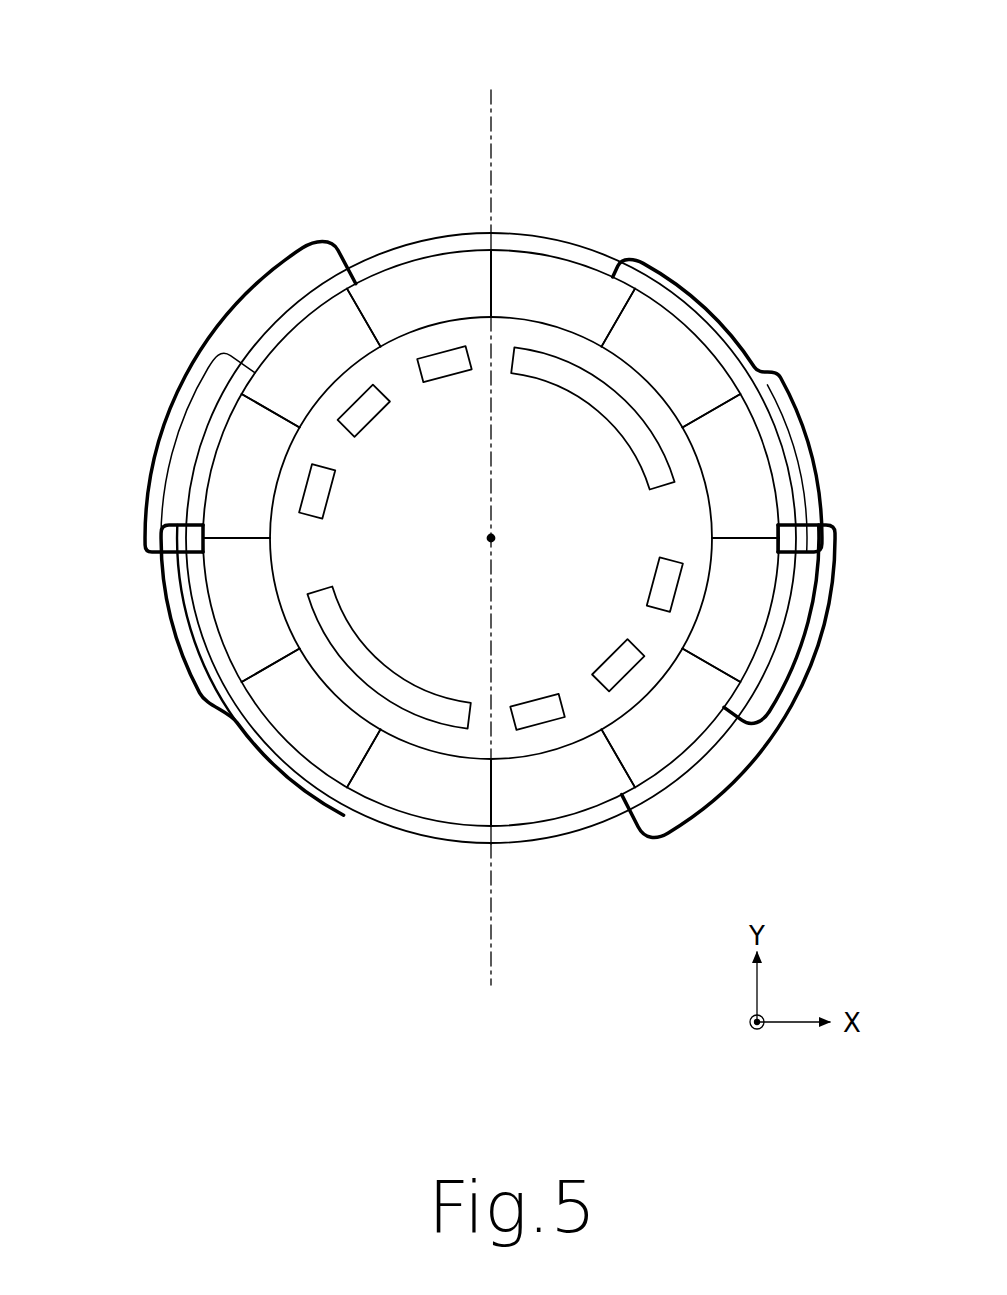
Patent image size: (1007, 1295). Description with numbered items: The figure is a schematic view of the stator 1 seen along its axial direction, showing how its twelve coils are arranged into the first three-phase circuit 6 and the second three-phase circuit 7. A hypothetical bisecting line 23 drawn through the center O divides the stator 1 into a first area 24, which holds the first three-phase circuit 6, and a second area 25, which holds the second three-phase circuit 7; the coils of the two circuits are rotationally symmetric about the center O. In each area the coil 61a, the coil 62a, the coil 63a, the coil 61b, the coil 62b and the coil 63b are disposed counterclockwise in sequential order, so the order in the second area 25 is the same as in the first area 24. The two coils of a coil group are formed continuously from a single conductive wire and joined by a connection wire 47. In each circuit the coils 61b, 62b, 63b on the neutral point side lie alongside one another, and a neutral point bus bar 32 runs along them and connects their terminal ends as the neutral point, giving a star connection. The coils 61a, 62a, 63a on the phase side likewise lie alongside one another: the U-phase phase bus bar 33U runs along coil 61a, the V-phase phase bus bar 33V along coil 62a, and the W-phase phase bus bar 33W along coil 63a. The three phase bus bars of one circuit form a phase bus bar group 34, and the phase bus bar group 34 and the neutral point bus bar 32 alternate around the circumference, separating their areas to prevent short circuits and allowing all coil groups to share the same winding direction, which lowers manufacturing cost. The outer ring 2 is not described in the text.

The stator 1 is at (716, 166).
The housing 2 is at (531, 237).
The first three-phase circuit 6 is at (250, 472).
The second three-phase circuit 7 is at (727, 469).
The hypothetical bisecting line 23 is at (498, 120).
The first area 24 is at (280, 226).
The second area 25 is at (626, 198).
The neutral point bus bar 32 is at (600, 404).
The U-phase phase bus bar 33U is at (450, 373).
The V-phase phase bus bar 33V is at (372, 416).
The W-phase phase bus bar 33W is at (323, 493).
The phase bus bar group 34 is at (634, 509).
The connection wire 47 is at (186, 663).
The coil 61a is at (491, 538).
The coil 61b is at (491, 538).
The coil 62a is at (491, 538).
The coil 62b is at (491, 538).
The coil 63a is at (491, 538).
The coil 63b is at (491, 538).
The center of the stator O is at (492, 535).